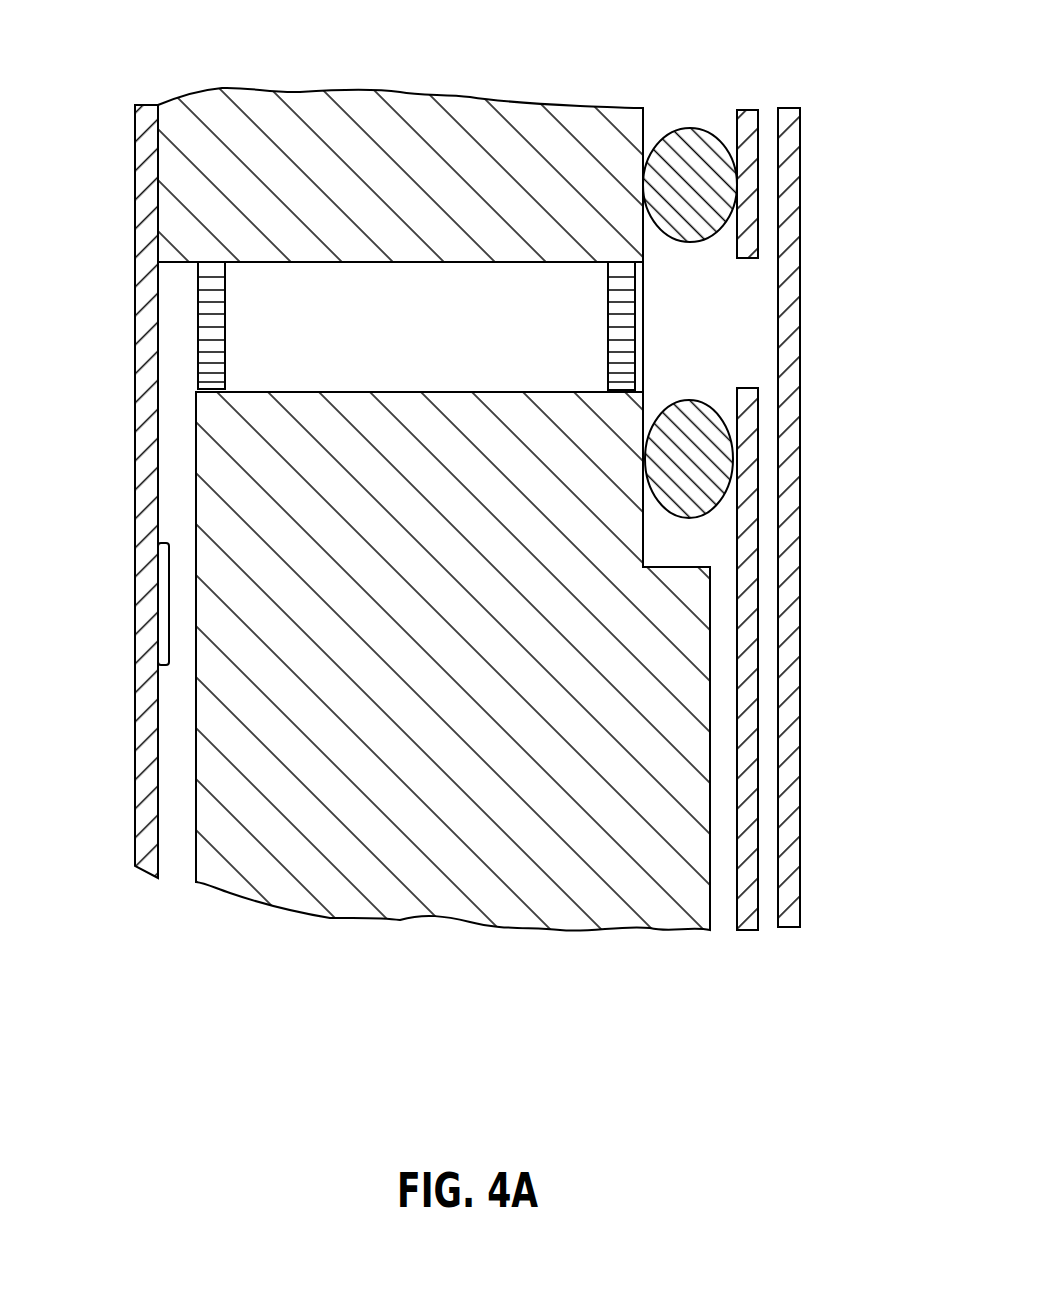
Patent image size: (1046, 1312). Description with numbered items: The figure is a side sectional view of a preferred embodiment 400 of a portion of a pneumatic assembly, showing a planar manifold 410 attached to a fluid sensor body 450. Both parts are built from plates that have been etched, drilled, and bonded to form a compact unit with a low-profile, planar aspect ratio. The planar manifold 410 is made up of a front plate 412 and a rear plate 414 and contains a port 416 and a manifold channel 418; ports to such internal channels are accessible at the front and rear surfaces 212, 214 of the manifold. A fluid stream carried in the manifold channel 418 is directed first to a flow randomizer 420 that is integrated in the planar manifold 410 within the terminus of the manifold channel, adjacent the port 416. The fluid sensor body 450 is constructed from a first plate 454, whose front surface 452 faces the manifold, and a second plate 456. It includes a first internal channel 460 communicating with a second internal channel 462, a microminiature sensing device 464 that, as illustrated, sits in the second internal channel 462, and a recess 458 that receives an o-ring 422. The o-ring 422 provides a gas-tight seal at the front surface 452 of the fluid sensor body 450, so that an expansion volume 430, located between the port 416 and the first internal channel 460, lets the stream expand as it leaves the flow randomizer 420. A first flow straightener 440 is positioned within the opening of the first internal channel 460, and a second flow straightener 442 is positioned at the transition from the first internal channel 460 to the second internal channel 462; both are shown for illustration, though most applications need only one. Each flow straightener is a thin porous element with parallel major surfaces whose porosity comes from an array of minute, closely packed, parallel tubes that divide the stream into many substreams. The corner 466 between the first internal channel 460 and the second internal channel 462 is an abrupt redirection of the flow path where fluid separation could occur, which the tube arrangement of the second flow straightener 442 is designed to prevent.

The preferred embodiment 400 is at (484, 539).
The planar manifold 410 is at (781, 511).
The front plate 412 is at (844, 899).
The rear plate 414 is at (692, 898).
The port 416 is at (706, 289).
The manifold channel 418 is at (828, 564).
The flow randomizer 420 is at (840, 517).
The o-ring 422 is at (690, 261).
The expansion volume 430 is at (811, 520).
The first flow straightener 440 is at (571, 326).
The second flow straightener 442 is at (282, 325).
The fluid sensor body 450 is at (478, 505).
The front surface 452 is at (809, 675).
The first plate 454 is at (380, 466).
The second plate 456 is at (111, 491).
The recess 458 is at (791, 540).
The first internal channel 460 is at (459, 347).
The second internal channel 462 is at (228, 570).
The microminiature sensing device 464 is at (112, 604).
The corner 466 is at (271, 370).
The front surface 212 is at (851, 830).
The rear surface 214 is at (679, 824).